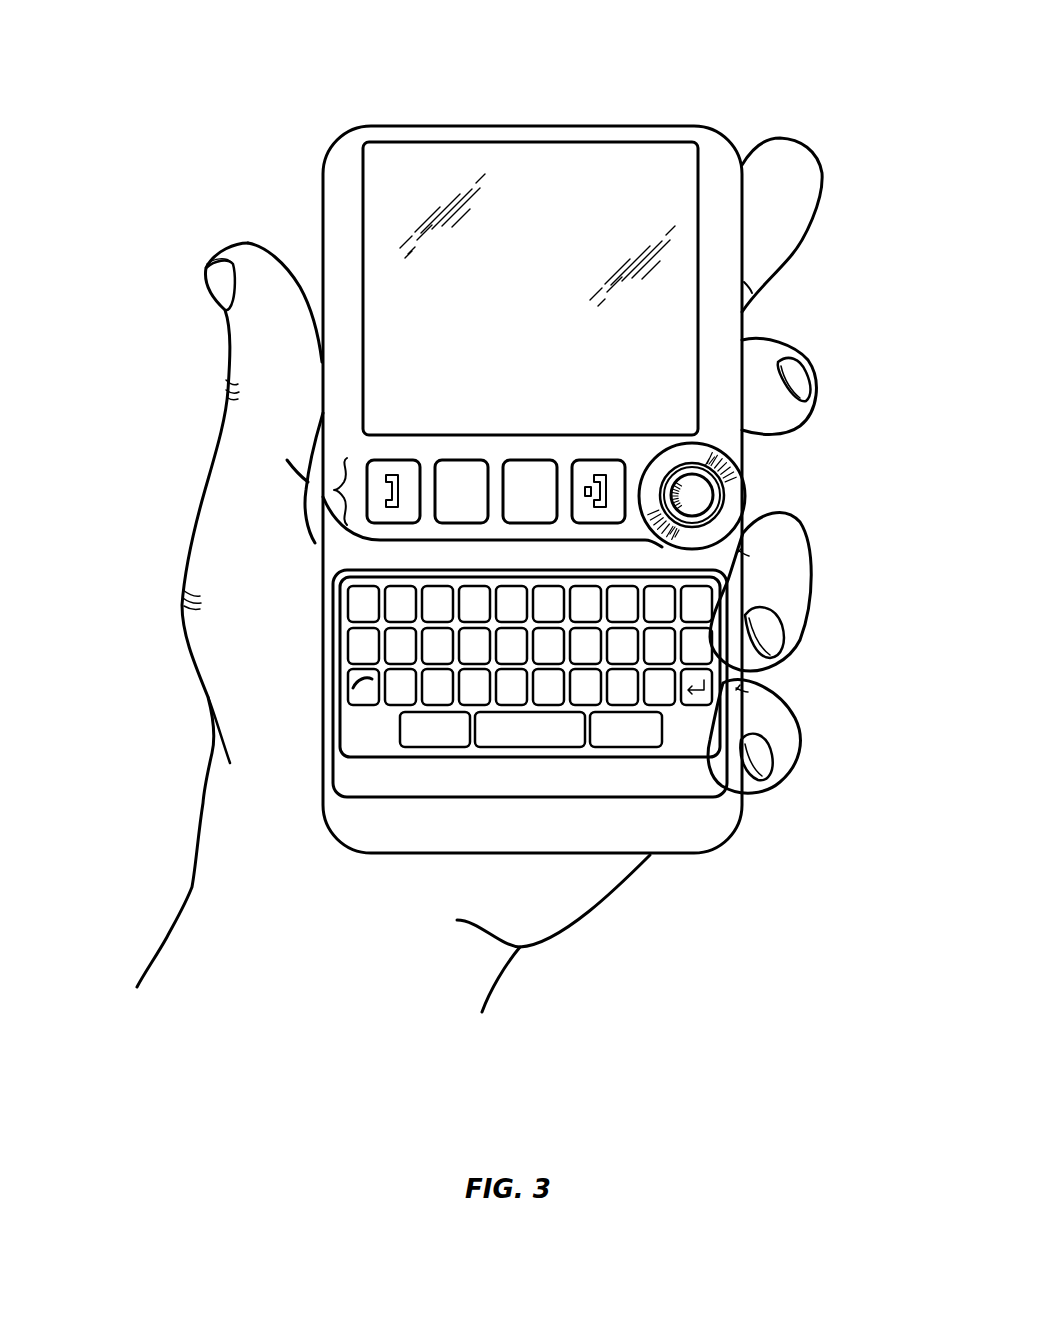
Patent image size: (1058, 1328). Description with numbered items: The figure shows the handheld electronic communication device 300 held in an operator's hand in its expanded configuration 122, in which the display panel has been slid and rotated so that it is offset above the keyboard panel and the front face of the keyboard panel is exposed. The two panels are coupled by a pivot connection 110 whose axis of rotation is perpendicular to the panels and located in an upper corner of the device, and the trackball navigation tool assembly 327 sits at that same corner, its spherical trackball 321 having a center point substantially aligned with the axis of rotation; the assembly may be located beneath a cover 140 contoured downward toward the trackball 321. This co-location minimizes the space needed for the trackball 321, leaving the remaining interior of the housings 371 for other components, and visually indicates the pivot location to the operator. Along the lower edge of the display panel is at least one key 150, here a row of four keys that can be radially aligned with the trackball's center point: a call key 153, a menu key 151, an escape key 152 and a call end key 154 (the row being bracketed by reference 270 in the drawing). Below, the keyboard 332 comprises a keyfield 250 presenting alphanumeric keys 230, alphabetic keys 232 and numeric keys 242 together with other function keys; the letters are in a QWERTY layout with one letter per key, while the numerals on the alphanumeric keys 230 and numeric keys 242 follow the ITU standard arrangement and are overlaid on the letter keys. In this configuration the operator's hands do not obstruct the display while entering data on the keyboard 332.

The handheld electronic communication device 300 is at (673, 48).
The expanded configuration 122 is at (529, 118).
The housings 371 is at (699, 124).
The call key 153 is at (376, 470).
The menu key 151 is at (443, 470).
The escape key 152 is at (510, 470).
The call end key 154 is at (585, 470).
The cover 140 is at (700, 449).
The trackball navigation tool assembly 327 is at (755, 473).
The trackball 321 is at (692, 495).
The pivot connection 110 is at (720, 545).
The alphabetic keys 232 is at (703, 610).
The row of function keys 270 is at (344, 490).
The key 150 is at (382, 531).
The alphanumeric keys 230 is at (395, 697).
The keyfield 250 is at (365, 737).
The numeric keys 242 is at (400, 742).
The keyboard 332 is at (537, 762).